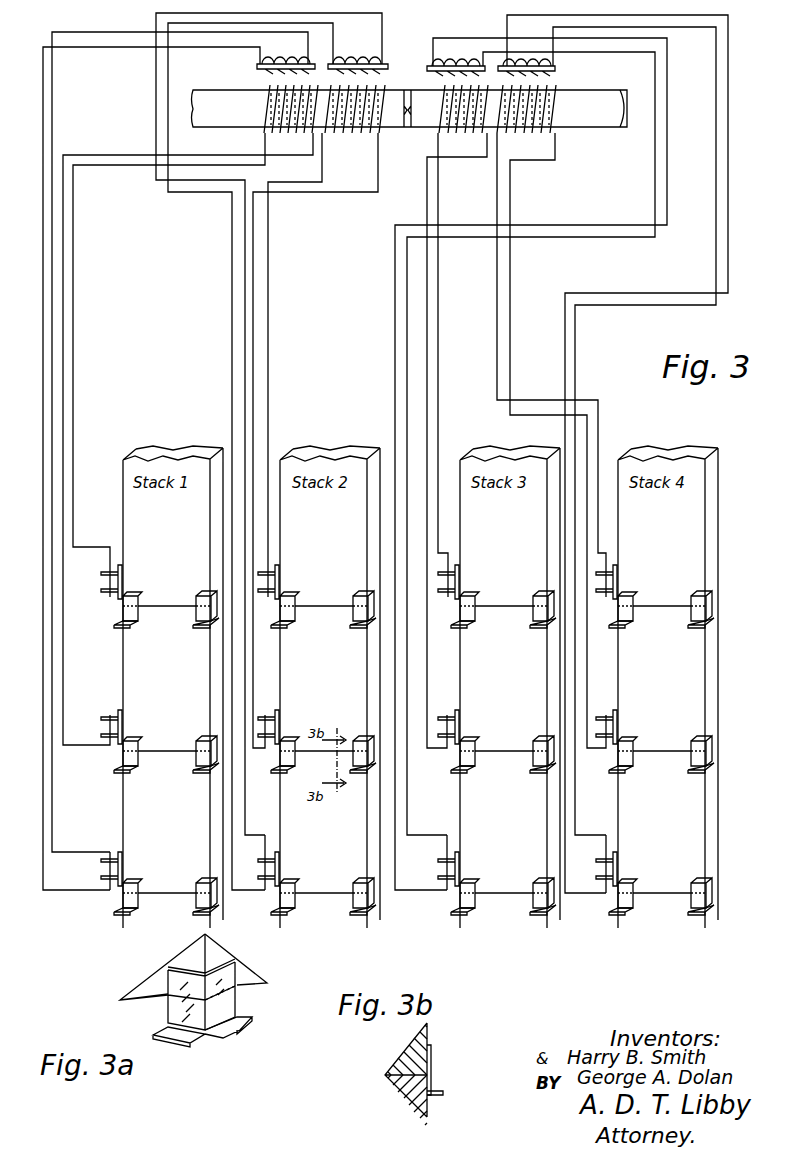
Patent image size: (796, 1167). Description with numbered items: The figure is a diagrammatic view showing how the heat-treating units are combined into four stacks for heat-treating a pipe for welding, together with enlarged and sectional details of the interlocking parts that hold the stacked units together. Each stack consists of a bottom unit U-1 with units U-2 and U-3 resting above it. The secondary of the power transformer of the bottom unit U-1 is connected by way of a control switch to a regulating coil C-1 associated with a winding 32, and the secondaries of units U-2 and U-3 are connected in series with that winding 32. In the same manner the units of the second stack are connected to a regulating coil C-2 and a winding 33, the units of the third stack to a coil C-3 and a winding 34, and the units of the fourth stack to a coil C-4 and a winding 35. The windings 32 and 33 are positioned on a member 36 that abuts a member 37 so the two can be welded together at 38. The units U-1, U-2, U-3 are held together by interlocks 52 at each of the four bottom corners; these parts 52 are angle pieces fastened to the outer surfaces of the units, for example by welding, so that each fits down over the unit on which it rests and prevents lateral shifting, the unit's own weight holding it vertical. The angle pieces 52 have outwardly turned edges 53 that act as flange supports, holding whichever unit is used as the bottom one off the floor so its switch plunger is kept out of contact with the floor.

In FIG. 3, the winding 32 is at (294, 136).
In FIG. 3, the winding 33 is at (358, 136).
In FIG. 3, the winding 34 is at (464, 132).
In FIG. 3, the winding 35 is at (534, 134).
In FIG. 3, the member 36 is at (233, 98).
In FIG. 3, the member 37 is at (608, 97).
In FIG. 3, the weld location 38 is at (408, 130).
In FIG. 3, the angle piece 52 is at (417, 746).
In FIG. 3A, the angle piece 52 is at (227, 982).
In FIG. 3B, the angle piece 52 is at (432, 1060).
In FIG. 3, the outwardly turned edge 53 is at (414, 775).
In FIG. 3A, the outwardly turned edge 53 is at (180, 1013).
In FIG. 3B, the outwardly turned edge 53 is at (443, 1092).
In FIG. 3, the regulating coil C-1 is at (286, 58).
In FIG. 3, the regulating coil C-2 is at (358, 59).
In FIG. 3, the regulating coil C-3 is at (456, 61).
In FIG. 3, the regulating coil C-4 is at (528, 64).
In FIG. 3, the bottom unit U-1 is at (396, 862).
In FIG. 3A, the bottom unit U-1 is at (130, 991).
In FIG. 3B, the bottom unit U-1 is at (405, 1099).
In FIG. 3, the unit U-2 is at (396, 721).
In FIG. 3B, the unit U-2 is at (428, 1035).
In FIG. 3, the unit U-3 is at (396, 585).